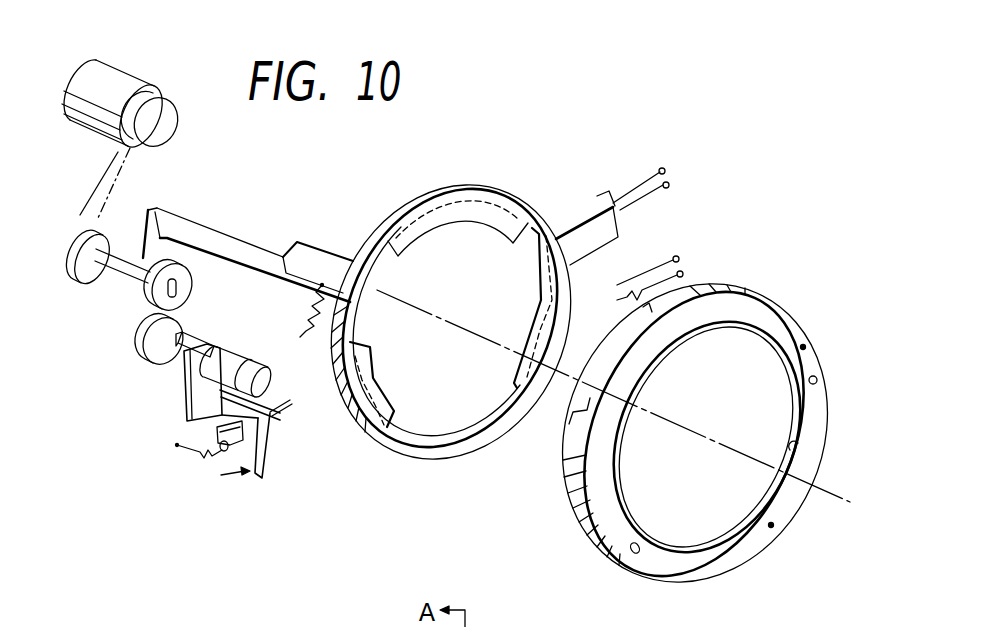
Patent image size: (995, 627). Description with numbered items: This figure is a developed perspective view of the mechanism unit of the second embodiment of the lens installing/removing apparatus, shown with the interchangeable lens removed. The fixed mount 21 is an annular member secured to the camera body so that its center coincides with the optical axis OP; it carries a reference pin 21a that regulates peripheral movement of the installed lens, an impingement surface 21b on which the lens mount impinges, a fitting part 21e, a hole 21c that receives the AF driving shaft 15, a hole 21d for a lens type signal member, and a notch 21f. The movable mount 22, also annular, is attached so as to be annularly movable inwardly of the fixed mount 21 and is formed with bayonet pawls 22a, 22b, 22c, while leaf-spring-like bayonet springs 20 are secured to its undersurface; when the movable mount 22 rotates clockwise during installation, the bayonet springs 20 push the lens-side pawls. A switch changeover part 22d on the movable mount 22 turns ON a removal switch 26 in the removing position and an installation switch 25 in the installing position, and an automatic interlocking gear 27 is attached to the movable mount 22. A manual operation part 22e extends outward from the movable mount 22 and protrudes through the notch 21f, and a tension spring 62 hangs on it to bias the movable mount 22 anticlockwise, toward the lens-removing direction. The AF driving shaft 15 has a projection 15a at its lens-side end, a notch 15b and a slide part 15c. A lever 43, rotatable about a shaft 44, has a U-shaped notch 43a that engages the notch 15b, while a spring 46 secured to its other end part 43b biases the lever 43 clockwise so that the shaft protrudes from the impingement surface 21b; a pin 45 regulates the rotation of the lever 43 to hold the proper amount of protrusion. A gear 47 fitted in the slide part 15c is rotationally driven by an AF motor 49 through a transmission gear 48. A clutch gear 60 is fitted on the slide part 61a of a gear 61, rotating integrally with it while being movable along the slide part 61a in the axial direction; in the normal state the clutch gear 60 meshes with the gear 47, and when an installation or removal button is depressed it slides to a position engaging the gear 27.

The AF driving shaft 15 is at (242, 364).
The projection 15a is at (288, 401).
The notch 15b is at (197, 349).
The slide part 15c is at (186, 335).
The bayonet springs 20 is at (478, 213).
The fixed mount 21 is at (719, 563).
The reference pin 21a is at (818, 380).
The impingement surface 21b is at (774, 528).
The hole 21c is at (624, 562).
The hole 21d is at (806, 346).
The fitting part 21e is at (801, 445).
The notch 21f is at (573, 404).
The movable mount 22 is at (442, 458).
The bayonet pawl 22a is at (449, 235).
The bayonet pawl 22b is at (383, 383).
The bayonet pawl 22c is at (540, 302).
The switch changeover part 22d is at (620, 228).
The manual operation part 22e is at (306, 243).
The installation switch 25 is at (684, 266).
The removal switch 26 is at (670, 175).
The automatic interlocking gear 27 is at (166, 209).
The lever 43 is at (266, 455).
The U-shaped notch 43a is at (187, 389).
The other end part 43b is at (258, 481).
The shaft 44 is at (271, 418).
The pin 45 is at (229, 470).
The spring 46 is at (206, 458).
The gear 47 is at (137, 344).
The transmission gear 48 is at (98, 182).
The AF motor 49 is at (128, 68).
The clutch gear 60 is at (190, 267).
The gear 61 is at (72, 272).
The slide part 61a is at (116, 278).
The tension spring 62 is at (313, 304).
The optical axis OP is at (707, 438).